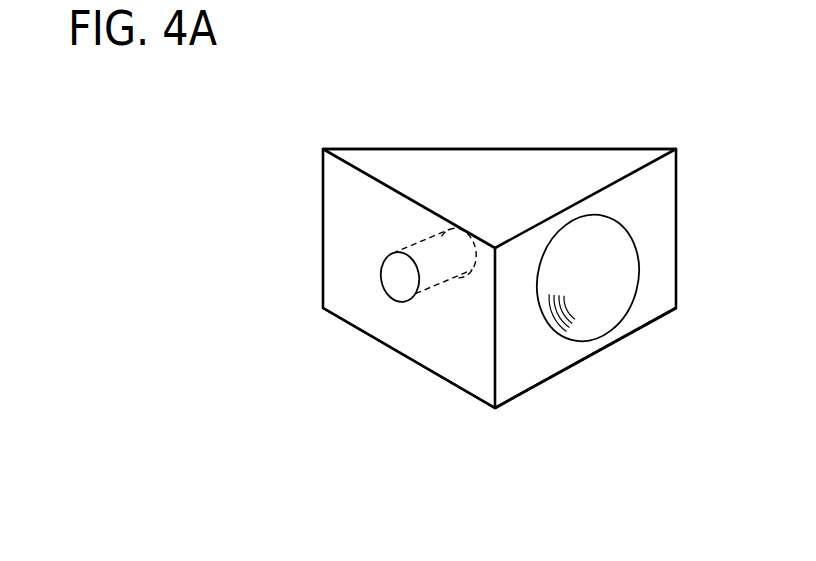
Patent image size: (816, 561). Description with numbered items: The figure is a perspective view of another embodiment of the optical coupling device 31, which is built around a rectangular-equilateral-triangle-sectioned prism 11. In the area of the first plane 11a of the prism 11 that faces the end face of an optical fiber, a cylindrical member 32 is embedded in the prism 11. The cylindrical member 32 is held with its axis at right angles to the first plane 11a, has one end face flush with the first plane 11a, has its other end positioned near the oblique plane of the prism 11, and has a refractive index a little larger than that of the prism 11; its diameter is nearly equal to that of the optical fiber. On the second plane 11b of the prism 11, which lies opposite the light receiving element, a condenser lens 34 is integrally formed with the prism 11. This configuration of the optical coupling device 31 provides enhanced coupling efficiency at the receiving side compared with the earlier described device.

The optical coupling device 31 is at (393, 135).
The prism 11 is at (578, 160).
The first plane 11a is at (448, 362).
The second plane 11b is at (527, 362).
The cylindrical member 32 is at (400, 277).
The condenser lens 34 is at (602, 290).